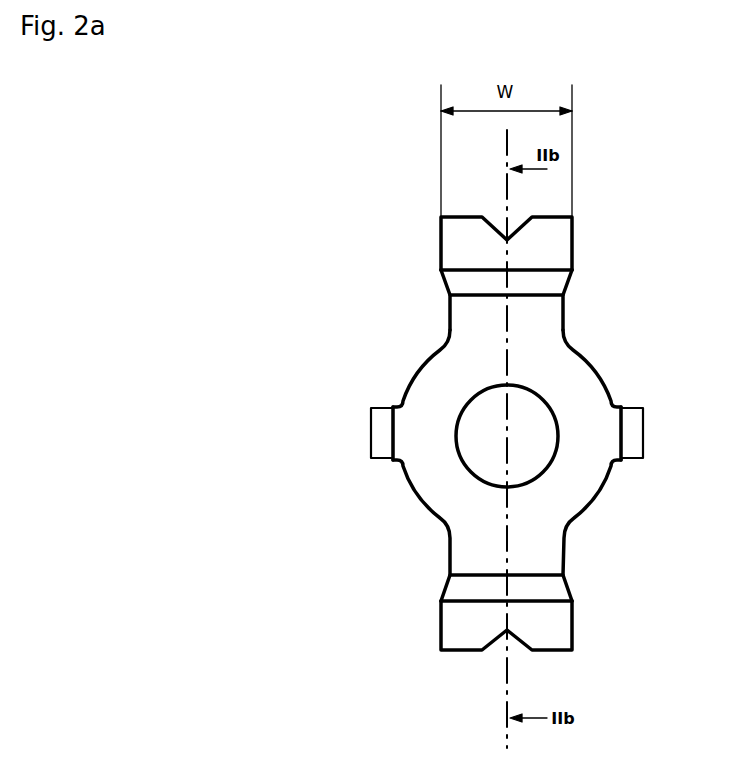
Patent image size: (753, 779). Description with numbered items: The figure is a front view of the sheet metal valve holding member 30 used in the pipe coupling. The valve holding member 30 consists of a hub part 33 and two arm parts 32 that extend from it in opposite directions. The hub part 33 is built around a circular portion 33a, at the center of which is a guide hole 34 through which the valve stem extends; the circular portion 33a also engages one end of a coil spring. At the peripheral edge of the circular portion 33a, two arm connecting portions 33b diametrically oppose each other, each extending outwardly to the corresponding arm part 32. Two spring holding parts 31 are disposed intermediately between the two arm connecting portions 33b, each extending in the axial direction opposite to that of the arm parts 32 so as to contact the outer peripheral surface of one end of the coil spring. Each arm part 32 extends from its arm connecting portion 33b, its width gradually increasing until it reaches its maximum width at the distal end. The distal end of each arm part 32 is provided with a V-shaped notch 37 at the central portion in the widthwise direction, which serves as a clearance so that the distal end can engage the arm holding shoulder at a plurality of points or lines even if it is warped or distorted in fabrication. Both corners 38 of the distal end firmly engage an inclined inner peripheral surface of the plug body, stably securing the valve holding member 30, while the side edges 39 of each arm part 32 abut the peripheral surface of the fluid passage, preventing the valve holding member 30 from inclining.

The sheet metal valve holding member 30 is at (358, 240).
The spring holding part 31 is at (384, 407).
The arm part 32 is at (443, 600).
The hub part 33 is at (440, 465).
The circular portion 33a is at (590, 387).
The arm connecting portion 33b is at (463, 332).
The guide hole 34 is at (530, 418).
The V-shaped notch 37 is at (493, 668).
The corners 38 is at (441, 217).
The side edges 39 is at (441, 274).